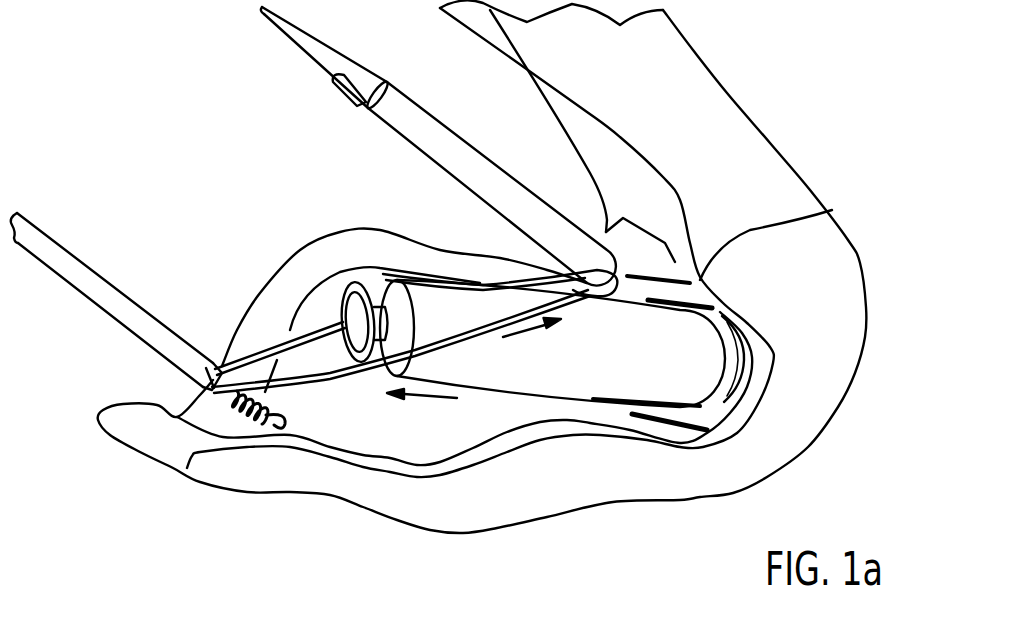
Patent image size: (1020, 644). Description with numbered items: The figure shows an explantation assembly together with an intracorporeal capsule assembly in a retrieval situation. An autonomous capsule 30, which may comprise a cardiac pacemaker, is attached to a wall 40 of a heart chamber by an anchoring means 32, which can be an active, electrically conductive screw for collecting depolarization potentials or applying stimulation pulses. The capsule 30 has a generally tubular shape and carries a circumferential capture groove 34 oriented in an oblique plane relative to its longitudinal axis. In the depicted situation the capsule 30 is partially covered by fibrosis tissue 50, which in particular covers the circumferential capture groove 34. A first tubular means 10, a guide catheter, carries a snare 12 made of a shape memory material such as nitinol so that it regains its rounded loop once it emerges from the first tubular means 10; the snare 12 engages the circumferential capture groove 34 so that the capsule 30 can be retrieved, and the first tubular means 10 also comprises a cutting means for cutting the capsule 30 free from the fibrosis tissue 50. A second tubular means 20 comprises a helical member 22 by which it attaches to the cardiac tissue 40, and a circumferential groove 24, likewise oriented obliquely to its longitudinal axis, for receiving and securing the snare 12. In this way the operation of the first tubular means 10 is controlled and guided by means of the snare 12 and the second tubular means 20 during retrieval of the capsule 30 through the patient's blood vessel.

The first tubular means 10 is at (472, 167).
The snare 12 is at (262, 342).
The second tubular means 20 is at (118, 305).
The helical member 22 is at (233, 398).
The circumferential groove 24 is at (200, 386).
The autonomous capsule 30 is at (608, 373).
The anchoring means 32 is at (832, 210).
The circumferential capture groove 34 is at (380, 297).
The wall of a heart chamber 40 is at (753, 160).
The fibrosis tissue 50 is at (303, 258).